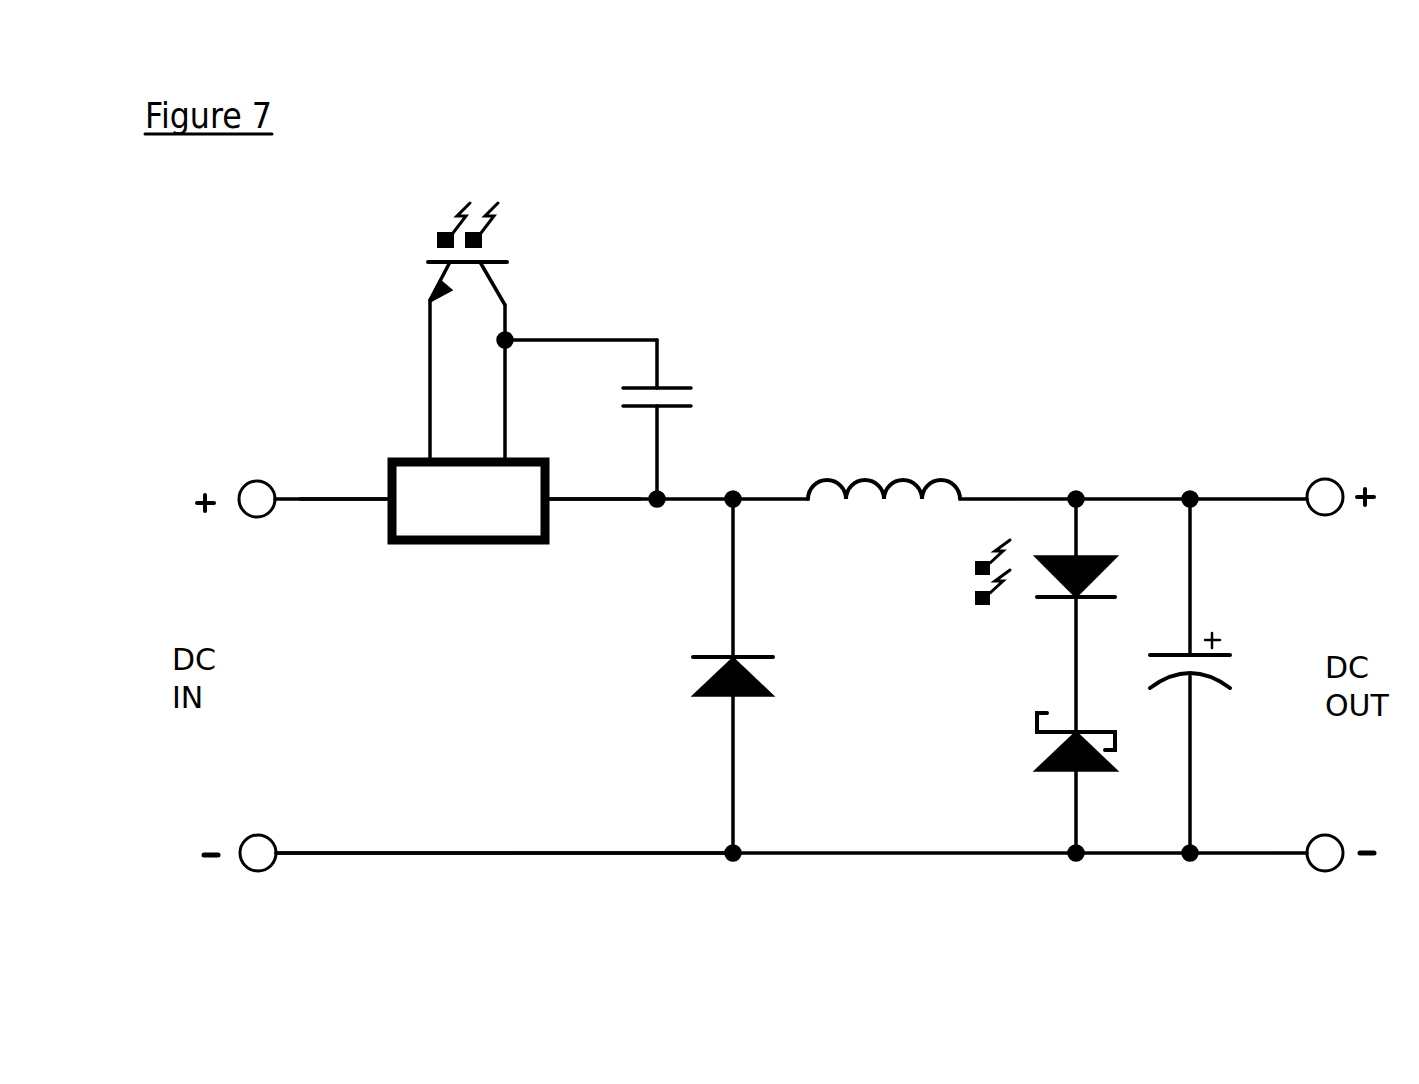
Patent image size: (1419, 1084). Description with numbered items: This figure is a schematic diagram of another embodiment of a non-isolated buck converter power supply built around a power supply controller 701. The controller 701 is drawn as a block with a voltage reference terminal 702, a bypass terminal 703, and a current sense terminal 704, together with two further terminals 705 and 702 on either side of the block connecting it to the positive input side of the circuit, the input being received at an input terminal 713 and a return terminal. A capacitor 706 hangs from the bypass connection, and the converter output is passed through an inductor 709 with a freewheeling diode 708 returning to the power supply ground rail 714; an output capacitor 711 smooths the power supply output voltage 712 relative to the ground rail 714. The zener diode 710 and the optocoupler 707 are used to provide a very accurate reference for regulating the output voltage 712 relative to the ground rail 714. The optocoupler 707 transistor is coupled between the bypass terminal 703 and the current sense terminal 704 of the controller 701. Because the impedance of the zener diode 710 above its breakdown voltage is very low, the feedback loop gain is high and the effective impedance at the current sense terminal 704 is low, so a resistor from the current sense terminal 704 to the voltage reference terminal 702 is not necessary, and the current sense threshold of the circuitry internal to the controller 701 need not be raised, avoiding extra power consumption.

The power supply controller 701 is at (470, 548).
The voltage reference terminal 702 is at (558, 508).
The bypass terminal 703 is at (510, 445).
The current sense terminal 704 is at (420, 437).
The input terminal of regulator 705 is at (375, 510).
The capacitor 706 is at (680, 372).
The optocoupler 707 is at (512, 250).
The diode 708 is at (705, 700).
The inductor 709 is at (873, 455).
The zener diode 710 is at (1033, 770).
The output capacitor 711 is at (1227, 635).
The power supply output voltage 712 is at (1313, 466).
The positive input terminal 713 is at (252, 480).
The power supply ground rail 714 is at (432, 845).